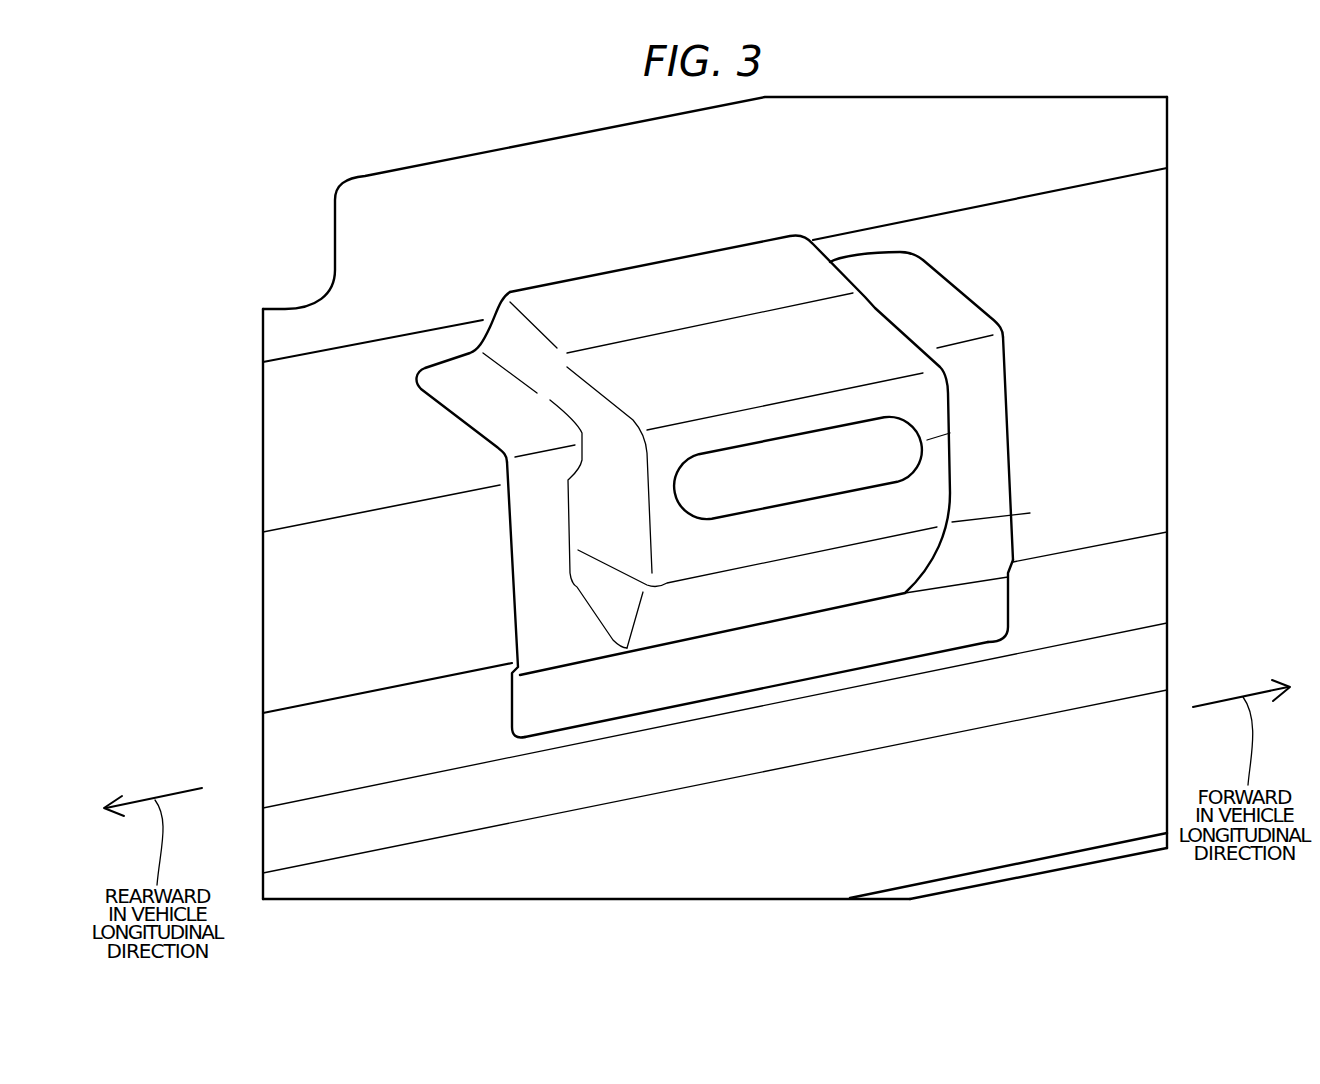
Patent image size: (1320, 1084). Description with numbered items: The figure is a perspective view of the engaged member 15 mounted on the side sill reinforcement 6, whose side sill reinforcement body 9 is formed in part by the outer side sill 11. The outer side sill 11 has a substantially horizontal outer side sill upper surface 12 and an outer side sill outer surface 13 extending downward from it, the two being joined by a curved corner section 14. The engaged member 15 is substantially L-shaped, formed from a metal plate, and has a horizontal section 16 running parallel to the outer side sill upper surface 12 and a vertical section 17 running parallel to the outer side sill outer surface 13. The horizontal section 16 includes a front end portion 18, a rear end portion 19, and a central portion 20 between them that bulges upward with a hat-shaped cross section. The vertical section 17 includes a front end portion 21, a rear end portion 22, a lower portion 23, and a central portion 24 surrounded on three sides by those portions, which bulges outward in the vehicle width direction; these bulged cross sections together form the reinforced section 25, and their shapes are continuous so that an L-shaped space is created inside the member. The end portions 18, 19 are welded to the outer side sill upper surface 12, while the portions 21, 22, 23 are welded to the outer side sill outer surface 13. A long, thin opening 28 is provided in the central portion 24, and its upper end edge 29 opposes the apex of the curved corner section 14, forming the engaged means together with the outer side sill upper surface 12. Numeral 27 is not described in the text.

The side sill reinforcement 6 is at (1142, 855).
The side sill reinforcement body 9 is at (1045, 873).
The outer side sill 11 is at (337, 262).
The outer side sill upper surface 12 is at (263, 490).
The outer side sill outer surface 13 is at (263, 670).
The curved corner section 14 is at (263, 530).
The engaged member 15 is at (512, 737).
The horizontal section 16 is at (880, 310).
The vertical section 17 is at (955, 397).
The front end portion 18 is at (927, 265).
The rear end portion 19 is at (443, 405).
The central portion 20 is at (540, 353).
The front end portion 21 is at (1017, 557).
The rear end portion 22 is at (513, 557).
The lower portion 23 is at (807, 683).
The central portion 24 is at (952, 522).
The reinforced section 25 is at (817, 247).
The bracket inner lower edge 27 is at (593, 608).
The opening 28 is at (927, 440).
The upper end edge 29 is at (735, 447).